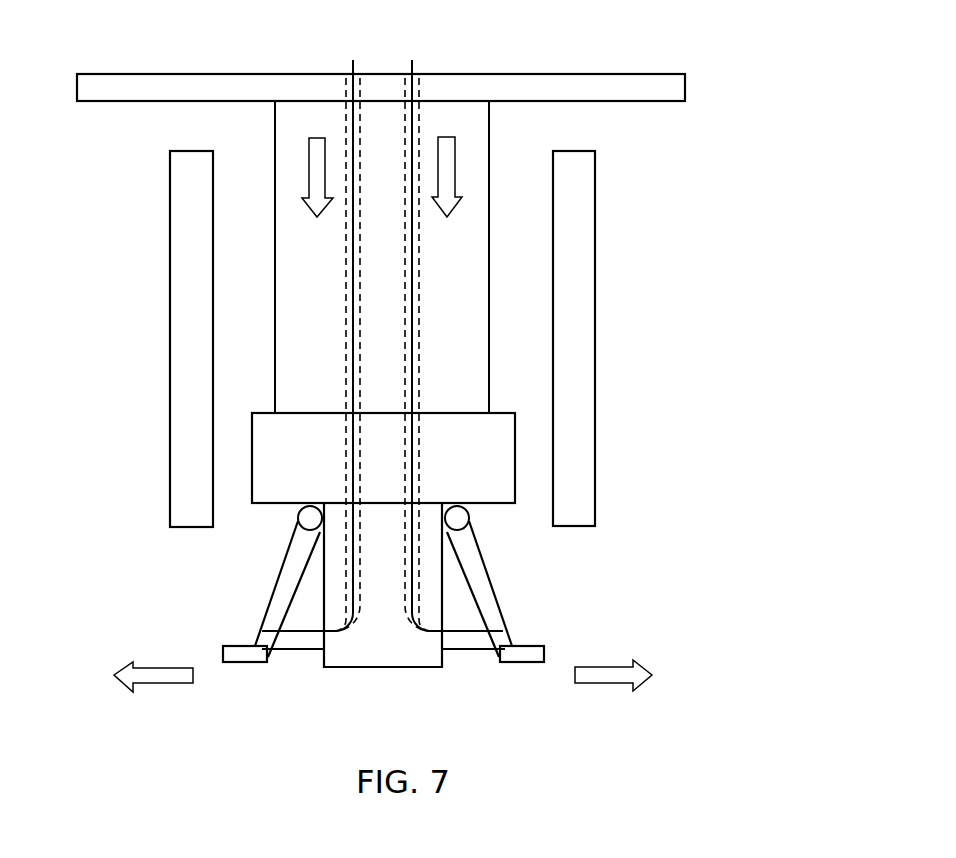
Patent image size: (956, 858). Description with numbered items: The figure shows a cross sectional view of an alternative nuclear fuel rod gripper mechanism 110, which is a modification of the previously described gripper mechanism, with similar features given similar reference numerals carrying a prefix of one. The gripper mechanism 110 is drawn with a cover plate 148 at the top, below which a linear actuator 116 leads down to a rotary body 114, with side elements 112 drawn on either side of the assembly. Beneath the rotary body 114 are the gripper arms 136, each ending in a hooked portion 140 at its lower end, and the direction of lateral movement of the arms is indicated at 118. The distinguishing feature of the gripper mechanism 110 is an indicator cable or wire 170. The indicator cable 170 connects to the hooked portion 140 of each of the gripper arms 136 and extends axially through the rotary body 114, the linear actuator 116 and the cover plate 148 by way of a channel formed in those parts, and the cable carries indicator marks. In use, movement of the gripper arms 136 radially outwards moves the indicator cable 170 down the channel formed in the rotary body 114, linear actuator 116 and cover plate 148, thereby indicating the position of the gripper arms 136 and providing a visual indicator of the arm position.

The gripper mechanism 110 is at (757, 108).
The side walls 112 is at (168, 305).
The rotary body 114 is at (492, 472).
The linear actuator 116 is at (479, 379).
The lateral movement direction 118 is at (595, 626).
The gripper arms 136 is at (273, 588).
The hooked portion 140 is at (245, 663).
The cover plate 148 is at (193, 87).
The indicator cable 170 is at (352, 438).